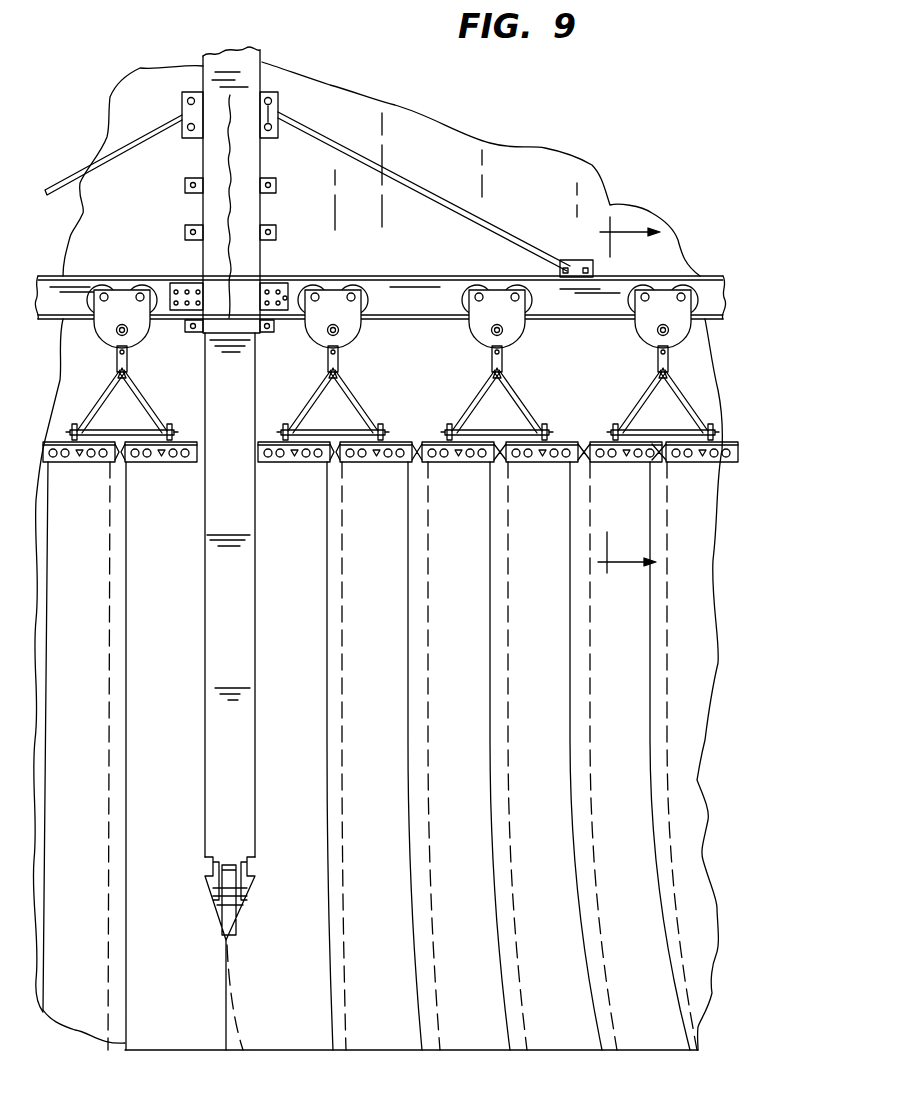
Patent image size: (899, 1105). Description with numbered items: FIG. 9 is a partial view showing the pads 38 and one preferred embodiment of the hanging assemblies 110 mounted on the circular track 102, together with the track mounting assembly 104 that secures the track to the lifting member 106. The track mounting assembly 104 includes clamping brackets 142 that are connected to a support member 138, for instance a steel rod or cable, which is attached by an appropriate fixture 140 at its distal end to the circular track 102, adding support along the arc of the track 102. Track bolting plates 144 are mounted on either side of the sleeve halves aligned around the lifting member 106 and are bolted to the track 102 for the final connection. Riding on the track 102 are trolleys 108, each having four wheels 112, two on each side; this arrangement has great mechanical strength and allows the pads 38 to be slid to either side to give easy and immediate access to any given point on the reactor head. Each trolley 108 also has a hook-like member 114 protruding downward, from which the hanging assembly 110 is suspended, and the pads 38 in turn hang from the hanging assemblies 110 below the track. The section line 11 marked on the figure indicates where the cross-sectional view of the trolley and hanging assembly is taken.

The track mounting assembly 104 is at (250, 100).
The clamping brackets 142 is at (278, 112).
The support member 138 is at (402, 171).
The distal fixture for support member 140 is at (605, 203).
The circular track 102 is at (722, 298).
The wheels 112 is at (343, 242).
The track bolting plates 144 is at (278, 304).
The trolley 108 is at (353, 339).
The hook-like member 114 is at (505, 356).
The hanging assembly 110 is at (541, 412).
The lifting member 106 is at (246, 490).
The pads 38 is at (178, 609).
The section line 11— 11 is at (629, 406).